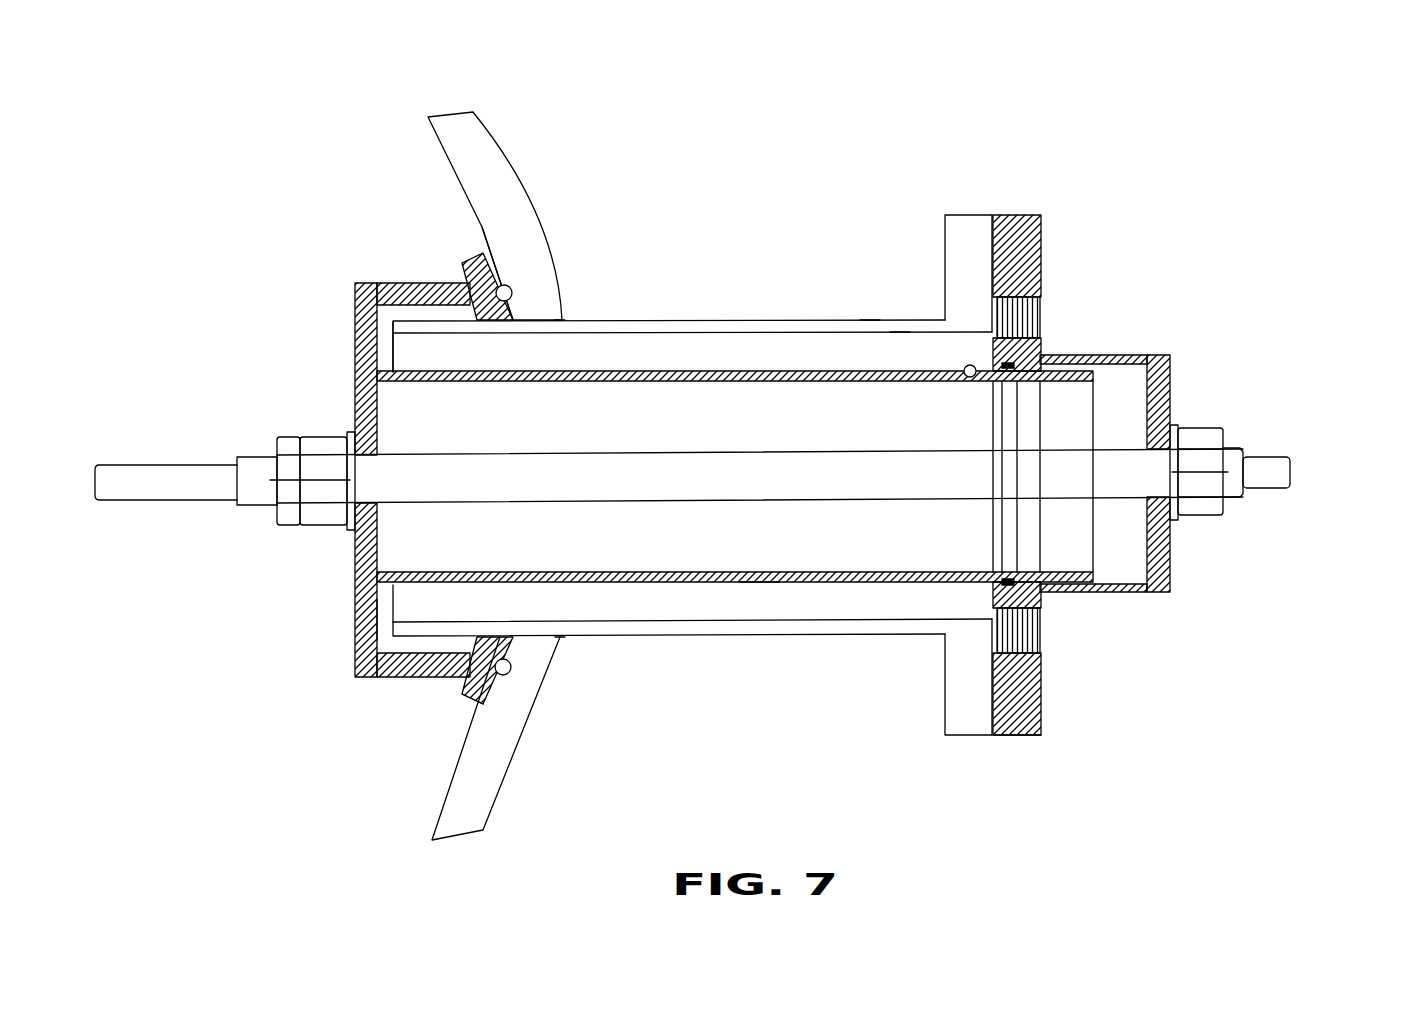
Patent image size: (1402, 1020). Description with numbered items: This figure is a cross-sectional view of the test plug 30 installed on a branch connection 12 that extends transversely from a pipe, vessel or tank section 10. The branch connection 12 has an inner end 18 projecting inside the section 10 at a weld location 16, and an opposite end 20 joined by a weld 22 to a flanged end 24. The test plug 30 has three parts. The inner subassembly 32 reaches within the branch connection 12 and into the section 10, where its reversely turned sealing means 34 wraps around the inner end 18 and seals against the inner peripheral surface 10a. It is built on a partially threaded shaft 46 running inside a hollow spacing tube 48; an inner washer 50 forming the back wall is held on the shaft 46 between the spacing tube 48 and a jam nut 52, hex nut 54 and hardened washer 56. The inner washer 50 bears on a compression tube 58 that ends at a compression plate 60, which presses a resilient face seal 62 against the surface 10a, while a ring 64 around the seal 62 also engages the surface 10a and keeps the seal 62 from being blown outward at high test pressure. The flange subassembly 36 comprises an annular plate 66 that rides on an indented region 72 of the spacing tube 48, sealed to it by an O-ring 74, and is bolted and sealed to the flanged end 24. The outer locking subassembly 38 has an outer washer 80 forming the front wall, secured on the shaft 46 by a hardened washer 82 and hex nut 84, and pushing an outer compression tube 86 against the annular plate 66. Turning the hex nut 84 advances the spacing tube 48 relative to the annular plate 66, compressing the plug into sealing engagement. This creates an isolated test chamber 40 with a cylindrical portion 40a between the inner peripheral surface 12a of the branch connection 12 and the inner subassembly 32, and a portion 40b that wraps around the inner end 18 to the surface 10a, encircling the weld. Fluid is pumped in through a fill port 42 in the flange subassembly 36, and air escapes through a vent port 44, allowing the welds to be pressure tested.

The pipe, vessel or tank section 10 is at (455, 118).
The inner peripheral surface 10a is at (478, 225).
The branch connection 12 is at (665, 320).
The inner peripheral surface of the branch connection 12a is at (850, 612).
The weld location 16 is at (556, 321).
The inner end 18 is at (412, 320).
The opposite end 20 is at (868, 322).
The weld 22 is at (900, 325).
The flanged end 24 is at (965, 212).
The test plug 30 is at (1292, 472).
The inner subassembly 32 is at (246, 385).
The reversely turned sealing means 34 is at (355, 325).
The flange subassembly 36 is at (1035, 212).
The outer locking subassembly 38 is at (1172, 410).
The test chamber 40 is at (750, 345).
The cylindrical portion 40a is at (697, 602).
The wrap-around portion 40b is at (385, 300).
The fill port 42 is at (1042, 635).
The vent port 44 is at (1040, 312).
The partially threaded shaft 46 is at (145, 488).
The spacing tube 48 is at (762, 584).
The inner washer 50 is at (355, 608).
The jam nut 52 is at (275, 522).
The hex nut 54 is at (305, 527).
The hardened washer 56 is at (340, 527).
The compression tube 58 is at (415, 680).
The compression plate 60 is at (468, 692).
The resilient face seal 62 is at (515, 290).
The ring 64 is at (480, 700).
The annular plate 66 is at (1022, 740).
The indented region 72 is at (965, 380).
The O-ring 74 is at (1000, 575).
The outer washer 80 is at (1172, 378).
The hardened washer 82 is at (1175, 520).
The hex nut 84 is at (1222, 518).
The outer compression tube 86 is at (1120, 355).